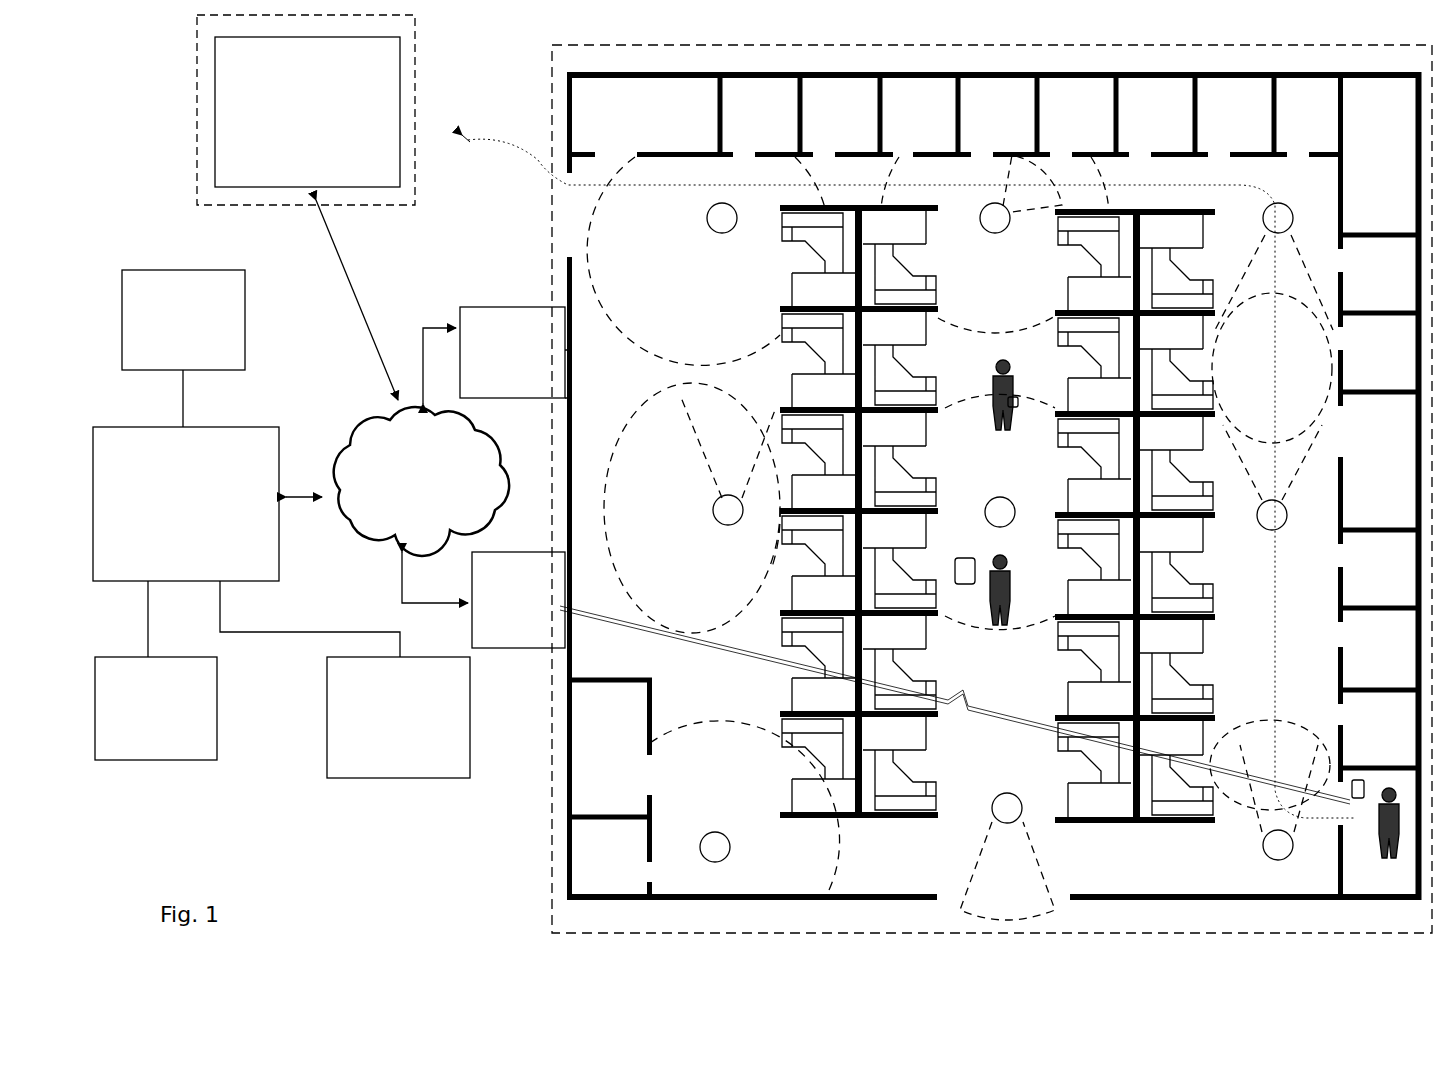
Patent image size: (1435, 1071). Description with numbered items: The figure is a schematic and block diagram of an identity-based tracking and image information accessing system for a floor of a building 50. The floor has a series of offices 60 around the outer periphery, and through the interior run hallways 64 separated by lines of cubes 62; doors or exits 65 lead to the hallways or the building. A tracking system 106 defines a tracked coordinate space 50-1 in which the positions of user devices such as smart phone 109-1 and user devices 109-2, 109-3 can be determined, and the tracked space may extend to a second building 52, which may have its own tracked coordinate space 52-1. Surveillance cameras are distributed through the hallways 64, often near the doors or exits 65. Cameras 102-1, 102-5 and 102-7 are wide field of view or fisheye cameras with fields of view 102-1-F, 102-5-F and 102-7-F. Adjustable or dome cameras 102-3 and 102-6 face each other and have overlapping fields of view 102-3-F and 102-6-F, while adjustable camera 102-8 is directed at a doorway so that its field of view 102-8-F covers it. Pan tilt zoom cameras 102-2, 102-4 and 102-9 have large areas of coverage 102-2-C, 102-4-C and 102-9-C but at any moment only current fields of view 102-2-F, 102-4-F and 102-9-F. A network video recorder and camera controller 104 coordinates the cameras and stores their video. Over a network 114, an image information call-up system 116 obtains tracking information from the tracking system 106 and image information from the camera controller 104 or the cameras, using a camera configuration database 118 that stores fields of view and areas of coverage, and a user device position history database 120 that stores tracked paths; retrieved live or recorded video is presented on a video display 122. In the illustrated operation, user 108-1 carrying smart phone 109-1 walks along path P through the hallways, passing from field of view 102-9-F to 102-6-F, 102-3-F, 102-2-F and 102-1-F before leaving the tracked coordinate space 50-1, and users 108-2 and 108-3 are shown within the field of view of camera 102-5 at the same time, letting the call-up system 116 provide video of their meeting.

The building 50 is at (606, 72).
The tracked coordinate space 50-1 is at (1062, 45).
The building-2 52 is at (307, 112).
The tracked coordinate space of building-2 52-1 is at (197, 62).
The offices 60 is at (994, 484).
The lines of cubes 62 is at (1182, 264).
The hallways 64 is at (1073, 747).
The doors or exits 65 is at (797, 546).
The surveillance camera 102-1 is at (708, 226).
The field of view 102-1-F is at (830, 175).
The pan tilt zoom camera 102-2 is at (987, 210).
The current field of view 102-2-F is at (1030, 240).
The area of coverage 102-2-C is at (955, 313).
The adjustable camera 102-3 is at (1295, 208).
The field of view 102-3-F is at (1248, 268).
The pan tilt zoom camera 102-4 is at (715, 505).
The current field of view 102-4-F is at (775, 572).
The area of coverage 102-4-C is at (774, 600).
The surveillance camera 102-5 is at (1007, 497).
The field of view 102-5-F is at (1032, 655).
The adjustable camera 102-6 is at (1288, 515).
The field of view 102-6-F is at (1250, 525).
The surveillance camera 102-7 is at (731, 848).
The field of view 102-7-F is at (695, 725).
The adjustable camera 102-8 is at (1022, 794).
The field of view 102-8-F is at (1043, 867).
The pan tilt zoom camera 102-9 is at (1262, 842).
The current field of view 102-9-F is at (1323, 865).
The area of coverage 102-9-C is at (1315, 738).
The network video recorder and camera controller 104 is at (512, 352).
The tracking system 106 is at (518, 600).
The user 108-1 is at (1368, 783).
The user 108-2 is at (993, 378).
The user 108-3 is at (990, 542).
The smart phone 109-1 is at (1389, 840).
The user device 109-2 is at (1010, 386).
The user device 109-3 is at (980, 577).
The network 114 is at (421, 481).
The image information call-up system 116 is at (186, 504).
The camera configuration database 118 is at (183, 320).
The user device position history database 120 is at (398, 717).
The video display 122 is at (156, 708).
The path P is at (1290, 580).